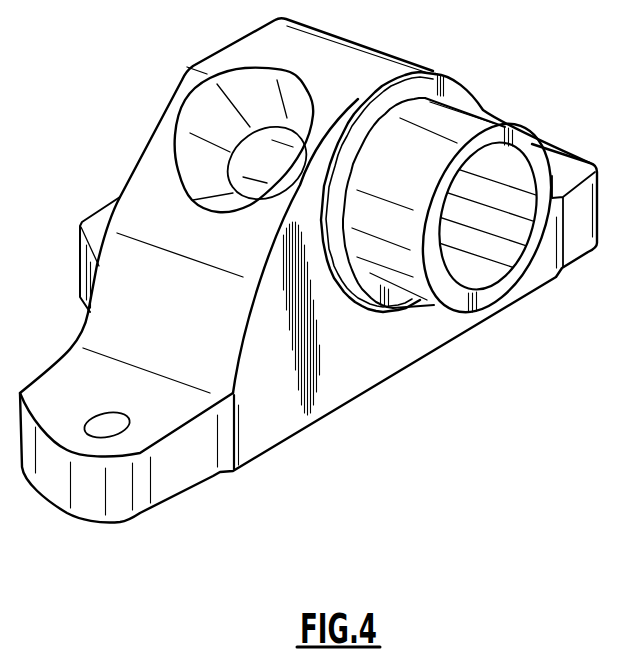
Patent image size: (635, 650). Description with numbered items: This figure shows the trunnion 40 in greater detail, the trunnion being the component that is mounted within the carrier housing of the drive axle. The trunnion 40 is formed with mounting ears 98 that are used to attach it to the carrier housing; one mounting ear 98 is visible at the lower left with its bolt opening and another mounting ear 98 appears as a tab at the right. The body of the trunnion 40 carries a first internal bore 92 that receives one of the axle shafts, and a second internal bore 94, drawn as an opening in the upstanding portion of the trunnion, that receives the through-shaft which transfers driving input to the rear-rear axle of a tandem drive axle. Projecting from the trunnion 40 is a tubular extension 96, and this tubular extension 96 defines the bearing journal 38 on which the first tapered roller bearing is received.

The bearing journal 38 is at (478, 112).
The trunnion 40 is at (340, 373).
The first internal bore 92 is at (503, 250).
The second internal bore 94 is at (253, 97).
The tubular extension 96 is at (518, 140).
The mounting ears 98 is at (95, 424).